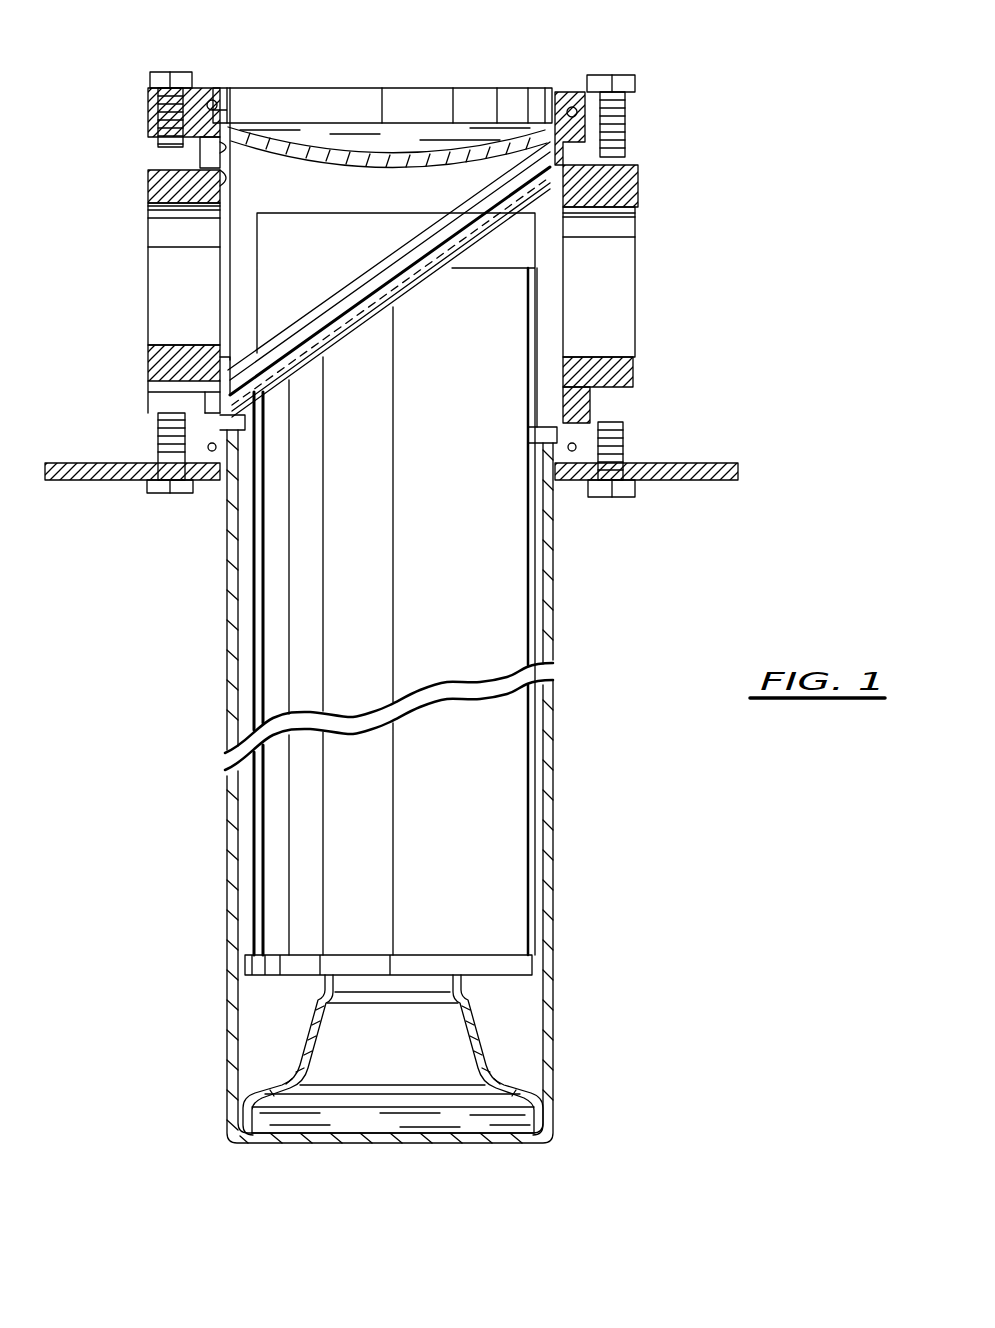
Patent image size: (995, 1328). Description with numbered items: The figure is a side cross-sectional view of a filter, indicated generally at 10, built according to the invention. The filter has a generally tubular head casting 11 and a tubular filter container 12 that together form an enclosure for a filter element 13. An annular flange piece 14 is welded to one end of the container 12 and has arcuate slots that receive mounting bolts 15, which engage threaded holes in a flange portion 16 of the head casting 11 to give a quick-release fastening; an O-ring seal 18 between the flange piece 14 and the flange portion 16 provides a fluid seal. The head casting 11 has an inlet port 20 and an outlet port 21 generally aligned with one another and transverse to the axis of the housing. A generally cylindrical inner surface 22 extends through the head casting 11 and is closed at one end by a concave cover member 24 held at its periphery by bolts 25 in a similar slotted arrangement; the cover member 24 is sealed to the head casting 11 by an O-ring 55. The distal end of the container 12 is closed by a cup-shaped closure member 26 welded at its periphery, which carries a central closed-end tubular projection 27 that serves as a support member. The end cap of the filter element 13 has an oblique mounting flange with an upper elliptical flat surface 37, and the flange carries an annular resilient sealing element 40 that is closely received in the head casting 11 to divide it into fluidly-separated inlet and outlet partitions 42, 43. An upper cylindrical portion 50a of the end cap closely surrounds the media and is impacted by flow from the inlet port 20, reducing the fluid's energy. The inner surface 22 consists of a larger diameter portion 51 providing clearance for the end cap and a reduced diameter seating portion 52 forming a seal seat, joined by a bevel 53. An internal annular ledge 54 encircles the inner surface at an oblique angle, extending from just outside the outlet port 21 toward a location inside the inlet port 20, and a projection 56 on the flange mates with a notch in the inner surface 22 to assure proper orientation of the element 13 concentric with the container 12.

The filter 10 is at (770, 160).
The head casting 11 is at (150, 185).
The filter container 12 is at (548, 745).
The filter element 13 is at (495, 602).
The annular flange piece 14 is at (625, 463).
The mounting bolts 15 is at (606, 500).
The flange portion 16 is at (640, 440).
The O-ring seal 18 is at (210, 470).
The inlet port 20 is at (222, 396).
The outlet port 21 is at (630, 345).
The inner surface 22 is at (200, 157).
The cover member 24 is at (285, 148).
The bolts 25 is at (612, 72).
The cup-shaped closure member 26 is at (494, 1008).
The tubular projection 27 is at (458, 982).
The upper elliptical flat surface 37 is at (228, 365).
The annular resilient sealing element 40 is at (365, 300).
The inlet partition 42 is at (320, 180).
The outlet partition 43 is at (546, 303).
The upper cylindrical portion 50a is at (275, 282).
The larger diameter portion 51 is at (205, 128).
The reduced diameter seating portion 52 is at (222, 397).
The bevel 53 is at (205, 390).
The internal annular ledge 54 is at (568, 210).
The O-ring 55 is at (213, 95).
The projection 56 is at (578, 120).